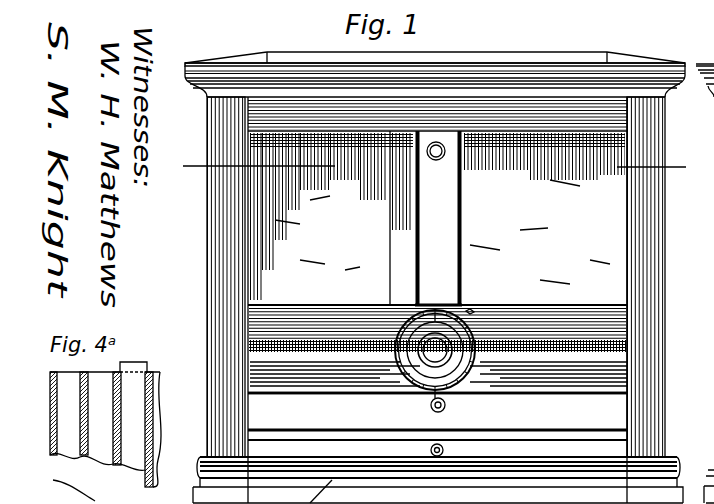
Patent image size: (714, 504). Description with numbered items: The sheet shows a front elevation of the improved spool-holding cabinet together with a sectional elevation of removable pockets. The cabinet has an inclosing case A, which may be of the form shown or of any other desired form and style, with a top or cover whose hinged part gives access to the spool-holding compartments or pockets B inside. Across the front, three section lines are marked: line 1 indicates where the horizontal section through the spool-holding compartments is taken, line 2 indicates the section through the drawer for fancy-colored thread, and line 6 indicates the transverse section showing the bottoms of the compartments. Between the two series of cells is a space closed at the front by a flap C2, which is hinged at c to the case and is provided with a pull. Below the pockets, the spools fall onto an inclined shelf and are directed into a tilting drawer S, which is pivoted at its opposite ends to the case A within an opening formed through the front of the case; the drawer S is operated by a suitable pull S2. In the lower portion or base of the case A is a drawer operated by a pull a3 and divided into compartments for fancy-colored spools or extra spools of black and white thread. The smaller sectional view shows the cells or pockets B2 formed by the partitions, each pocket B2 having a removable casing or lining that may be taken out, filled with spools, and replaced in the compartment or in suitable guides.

In FIG. 1, the section line 1 is at (431, 166).
In FIG. 1, the section line 2 is at (690, 438).
In FIG. 1, the section line 6 is at (200, 390).
In FIG. 1, the inclosing case A is at (427, 277).
In FIG. 1, the hinge c is at (474, 313).
In FIG. 1, the flap C2 is at (438, 218).
In FIG. 1, the tilting drawer S is at (437, 361).
In FIG. 1, the pull S2 is at (445, 405).
In FIG. 1, the pull a3 is at (444, 450).
In FIG. 4A, the spool-holding compartments or pockets B is at (48, 406).
In FIG. 4A, the cells or pockets B2 is at (135, 455).